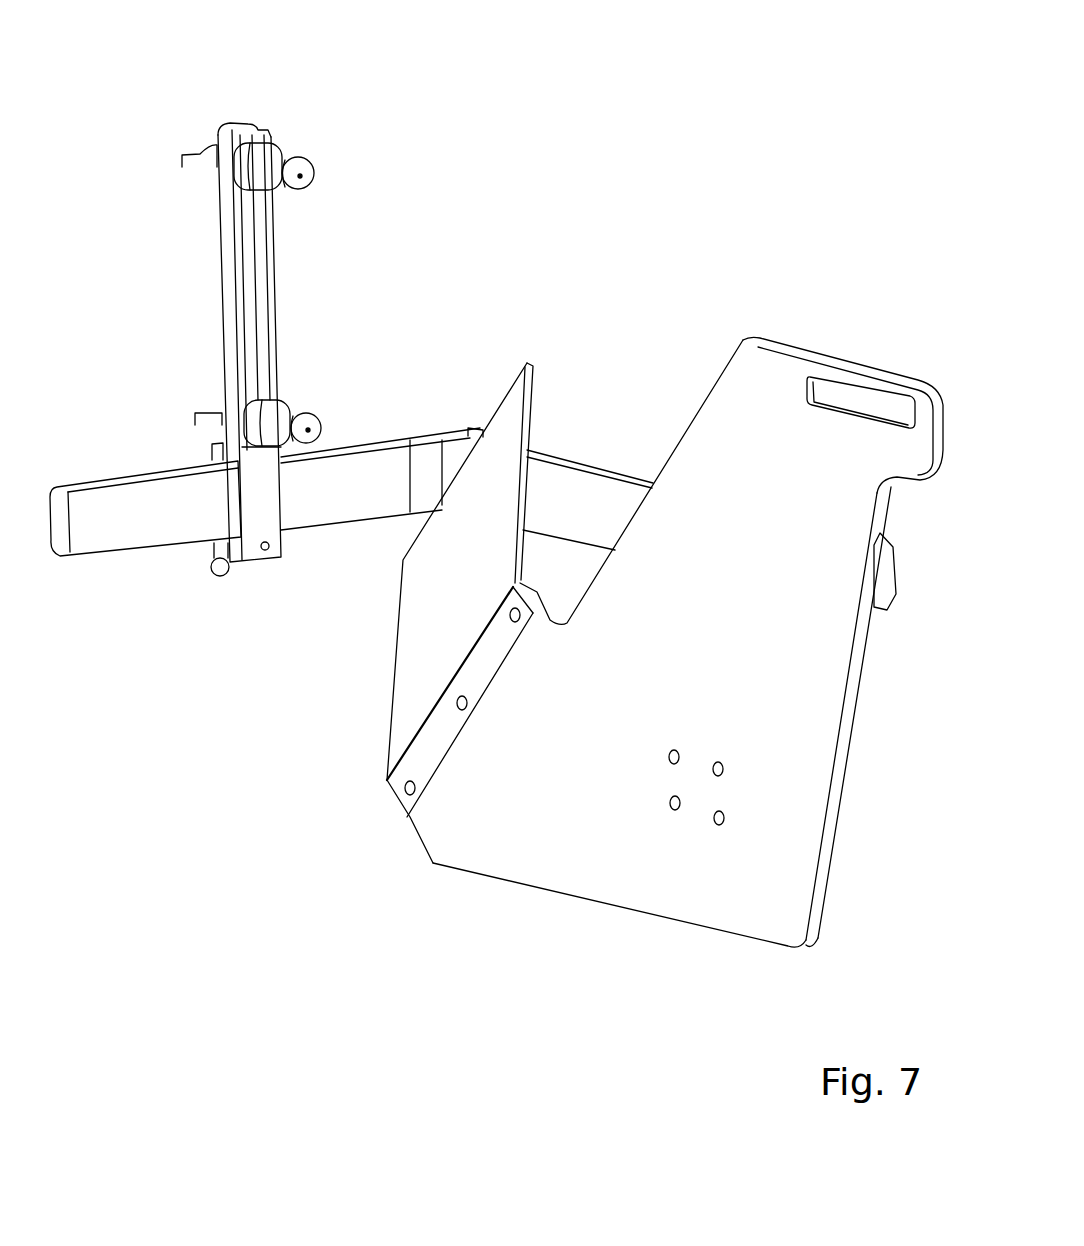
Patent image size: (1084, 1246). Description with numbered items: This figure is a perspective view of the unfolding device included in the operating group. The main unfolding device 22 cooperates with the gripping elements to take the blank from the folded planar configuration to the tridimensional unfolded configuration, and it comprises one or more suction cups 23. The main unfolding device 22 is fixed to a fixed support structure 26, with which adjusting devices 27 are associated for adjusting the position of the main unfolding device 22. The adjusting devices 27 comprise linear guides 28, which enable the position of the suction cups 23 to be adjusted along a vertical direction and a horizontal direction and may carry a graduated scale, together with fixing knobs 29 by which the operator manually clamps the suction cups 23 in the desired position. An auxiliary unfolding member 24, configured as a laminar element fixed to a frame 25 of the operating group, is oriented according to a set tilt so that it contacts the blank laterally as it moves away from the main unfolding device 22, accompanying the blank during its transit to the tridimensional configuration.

The main unfolding device 22 is at (318, 112).
The suction cup 23 is at (303, 177).
The auxiliary unfolding member 24 is at (447, 593).
The frame 25 is at (725, 637).
The fixed support structure 26 is at (435, 372).
The adjusting device 27 is at (190, 315).
The linear guide 28 is at (253, 290).
The fixing knob 29 is at (185, 157).